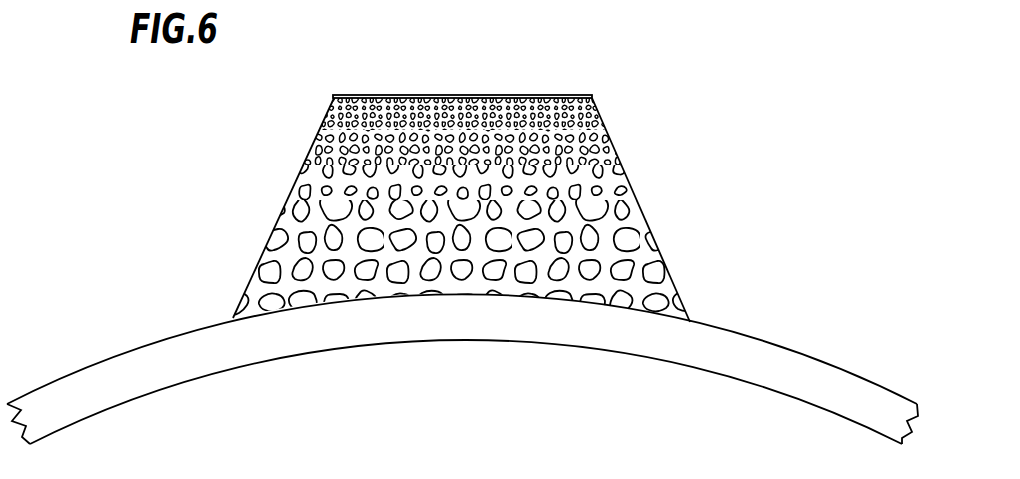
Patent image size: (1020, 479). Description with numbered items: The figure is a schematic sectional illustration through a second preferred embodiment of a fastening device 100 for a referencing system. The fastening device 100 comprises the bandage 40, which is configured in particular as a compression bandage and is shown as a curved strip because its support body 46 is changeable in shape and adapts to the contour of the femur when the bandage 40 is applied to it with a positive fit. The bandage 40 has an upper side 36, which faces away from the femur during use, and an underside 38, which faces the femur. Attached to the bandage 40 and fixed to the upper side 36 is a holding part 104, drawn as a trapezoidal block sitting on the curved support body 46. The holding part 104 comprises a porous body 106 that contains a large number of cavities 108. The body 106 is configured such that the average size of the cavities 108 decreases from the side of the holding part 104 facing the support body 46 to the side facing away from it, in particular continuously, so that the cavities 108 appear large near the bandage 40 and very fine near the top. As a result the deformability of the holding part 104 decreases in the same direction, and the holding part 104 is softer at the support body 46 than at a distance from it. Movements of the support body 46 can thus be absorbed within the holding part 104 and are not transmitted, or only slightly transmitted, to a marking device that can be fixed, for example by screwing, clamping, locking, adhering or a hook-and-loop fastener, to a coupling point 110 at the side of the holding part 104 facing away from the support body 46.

The fastening device 100 is at (462, 236).
The holding part 104 is at (493, 167).
The porous body 106 is at (567, 175).
The cavities 108 is at (343, 190).
The coupling point 110 is at (544, 97).
The upper side 36 is at (178, 334).
The underside 38 is at (193, 378).
The bandage 40 is at (462, 356).
The support body 46 is at (812, 374).